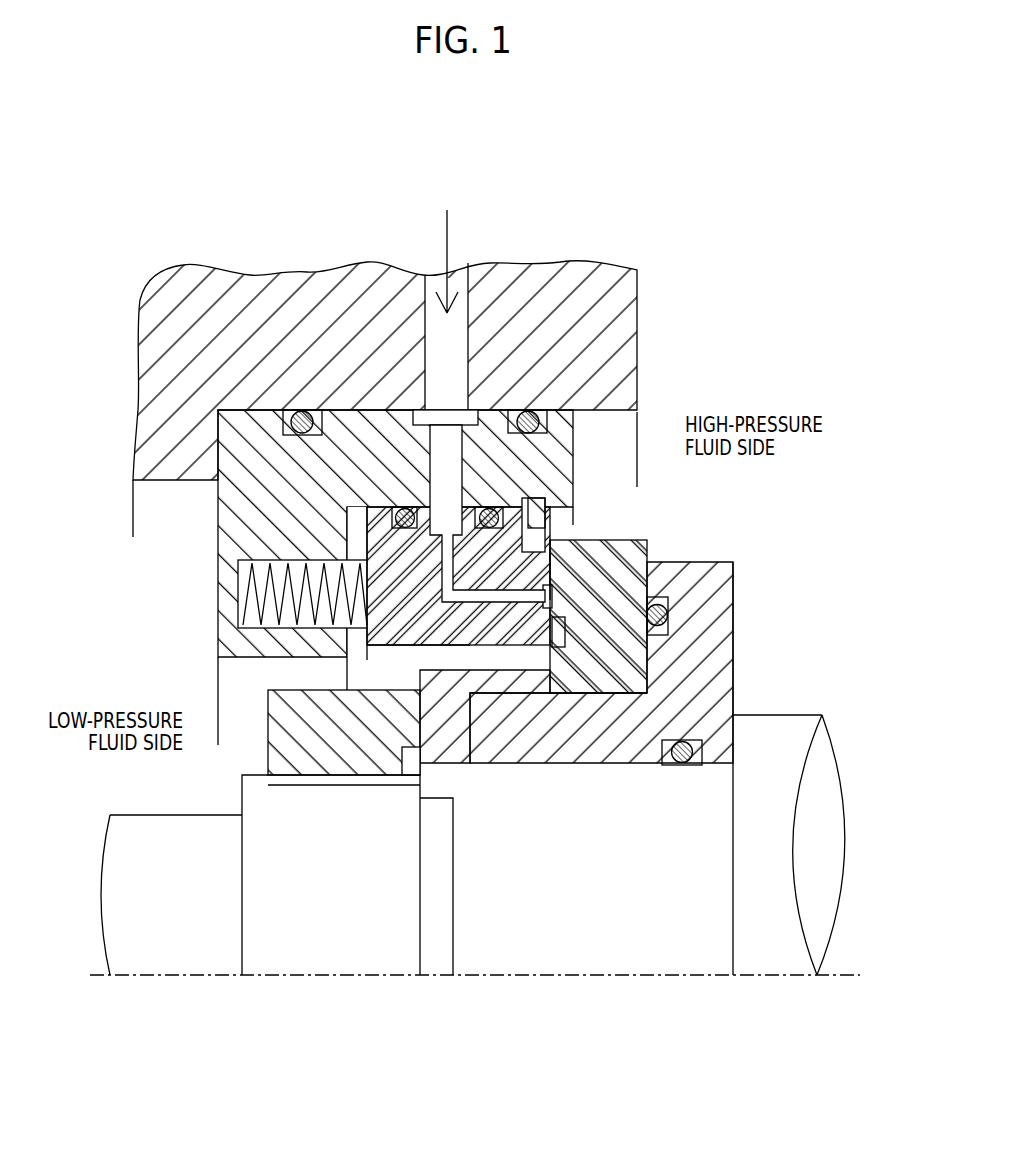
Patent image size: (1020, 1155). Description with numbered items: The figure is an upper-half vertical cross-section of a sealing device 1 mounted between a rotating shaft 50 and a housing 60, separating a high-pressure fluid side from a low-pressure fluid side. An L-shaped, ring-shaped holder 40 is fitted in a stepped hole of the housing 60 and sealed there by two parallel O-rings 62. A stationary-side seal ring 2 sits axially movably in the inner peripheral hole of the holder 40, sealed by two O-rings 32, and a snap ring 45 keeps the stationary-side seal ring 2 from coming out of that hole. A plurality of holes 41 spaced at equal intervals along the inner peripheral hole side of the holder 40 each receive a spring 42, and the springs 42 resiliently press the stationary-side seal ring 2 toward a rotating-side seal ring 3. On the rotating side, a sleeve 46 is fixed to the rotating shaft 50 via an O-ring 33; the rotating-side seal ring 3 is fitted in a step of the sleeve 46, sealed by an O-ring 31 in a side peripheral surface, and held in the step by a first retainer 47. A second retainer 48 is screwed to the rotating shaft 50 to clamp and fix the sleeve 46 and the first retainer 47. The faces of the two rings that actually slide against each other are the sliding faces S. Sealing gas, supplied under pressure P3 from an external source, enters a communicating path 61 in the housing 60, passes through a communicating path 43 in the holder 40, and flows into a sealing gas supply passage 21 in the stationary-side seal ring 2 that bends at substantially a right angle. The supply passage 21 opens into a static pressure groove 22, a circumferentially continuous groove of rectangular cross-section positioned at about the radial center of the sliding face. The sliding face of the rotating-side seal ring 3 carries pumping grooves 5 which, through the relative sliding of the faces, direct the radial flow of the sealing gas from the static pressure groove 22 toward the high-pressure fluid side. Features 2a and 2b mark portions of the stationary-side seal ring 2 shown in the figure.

The sealing device 1 is at (470, 546).
The stationary-side seal ring 2 is at (435, 623).
The seal ring lower portion 2a is at (418, 647).
The seal ring gap 2b is at (552, 535).
The rotating-side seal ring 3 is at (650, 688).
The pumping grooves 5 is at (567, 697).
The sealing gas supply passage 21 is at (465, 602).
The static pressure groove 22 is at (513, 607).
The O-ring 31 is at (662, 617).
The O-rings 32 is at (392, 510).
The O-ring 33 is at (682, 766).
The holder 40 is at (218, 517).
The holes 41 is at (237, 630).
The spring 42 is at (240, 578).
The communicating path 43 is at (447, 457).
The snap ring 45 is at (548, 498).
The sleeve 46 is at (733, 705).
The first retainer 47 is at (383, 775).
The second retainer 48 is at (270, 745).
The rotating shaft 50 is at (625, 939).
The housing 60 is at (638, 313).
The communicating path 61 is at (440, 327).
The O-rings 62 is at (285, 407).
The sliding faces S is at (645, 555).
The pressure P3 is at (455, 246).